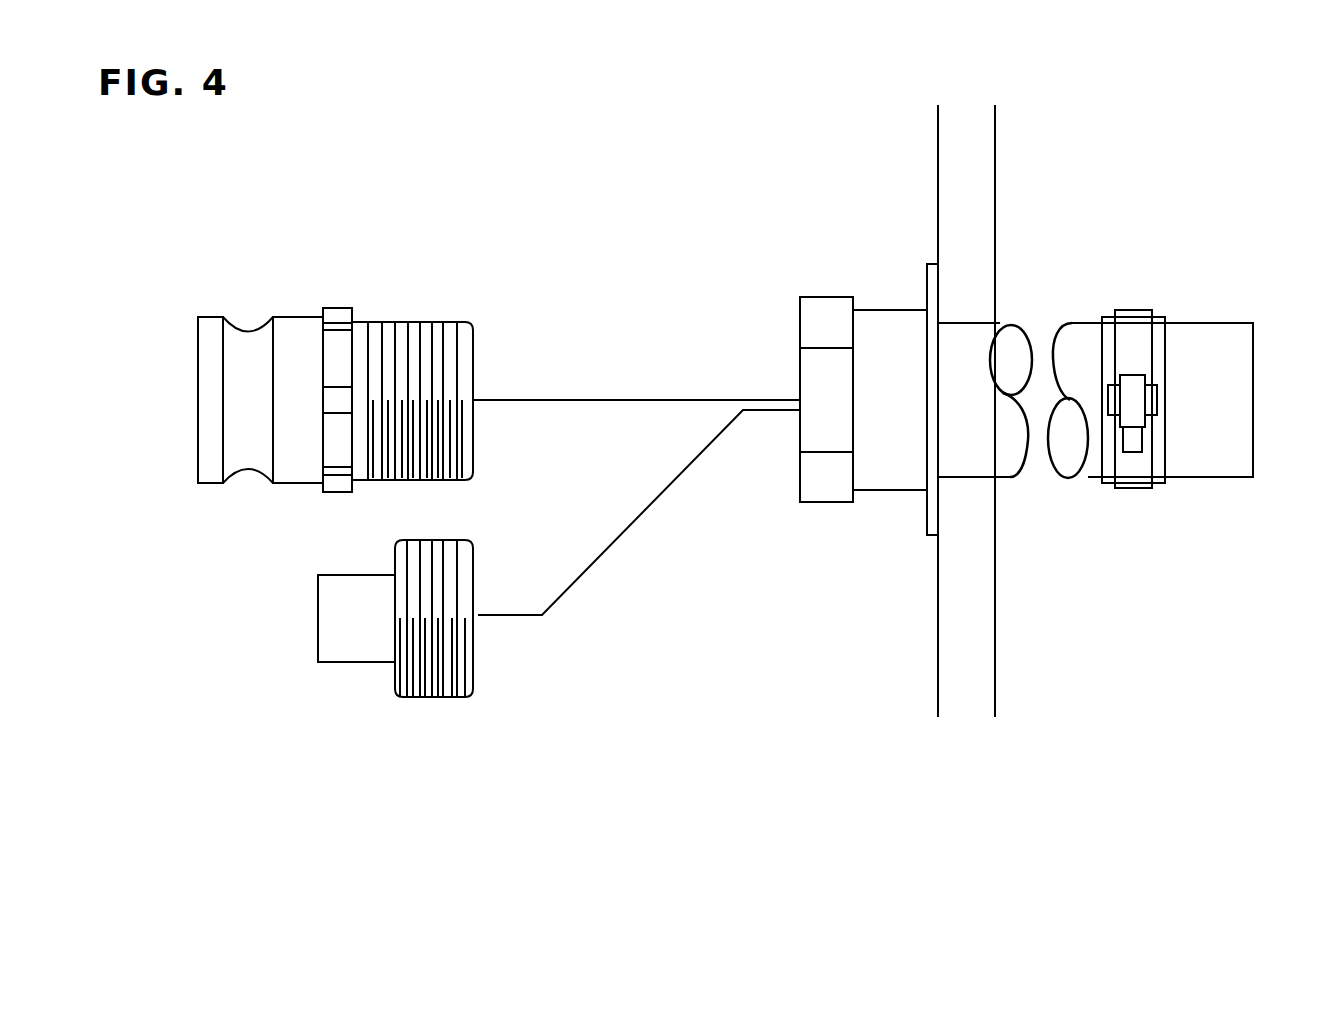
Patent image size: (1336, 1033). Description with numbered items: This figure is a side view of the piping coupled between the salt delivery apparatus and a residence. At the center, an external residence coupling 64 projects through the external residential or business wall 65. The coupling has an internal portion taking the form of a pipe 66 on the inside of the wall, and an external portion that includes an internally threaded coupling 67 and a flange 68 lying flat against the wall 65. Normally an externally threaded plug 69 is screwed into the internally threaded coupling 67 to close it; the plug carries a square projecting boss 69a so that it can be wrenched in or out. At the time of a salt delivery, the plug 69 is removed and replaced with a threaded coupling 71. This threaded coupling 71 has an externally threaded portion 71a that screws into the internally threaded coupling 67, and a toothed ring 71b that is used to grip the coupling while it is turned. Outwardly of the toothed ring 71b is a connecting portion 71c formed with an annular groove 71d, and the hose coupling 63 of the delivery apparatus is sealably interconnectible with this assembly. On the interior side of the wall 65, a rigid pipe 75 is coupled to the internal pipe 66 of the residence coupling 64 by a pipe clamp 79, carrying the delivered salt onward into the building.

The hose coupling 63 is at (349, 341).
The external residence coupling 64 is at (845, 318).
The residential or business wall 65 is at (938, 140).
The pipe 66 is at (970, 343).
The internally threaded coupling 67 is at (892, 310).
The flange 68 is at (930, 270).
The externally threaded plug 69 is at (440, 697).
The square projecting boss 69a is at (340, 662).
The threaded coupling 71 is at (303, 298).
The externally threaded portion 71a is at (452, 322).
The toothed ring 71b is at (337, 492).
The connecting portion 71c is at (280, 318).
The annular groove 71d is at (245, 326).
The rigid pipe 75 is at (1245, 370).
The pipe clamp 79 is at (1132, 488).